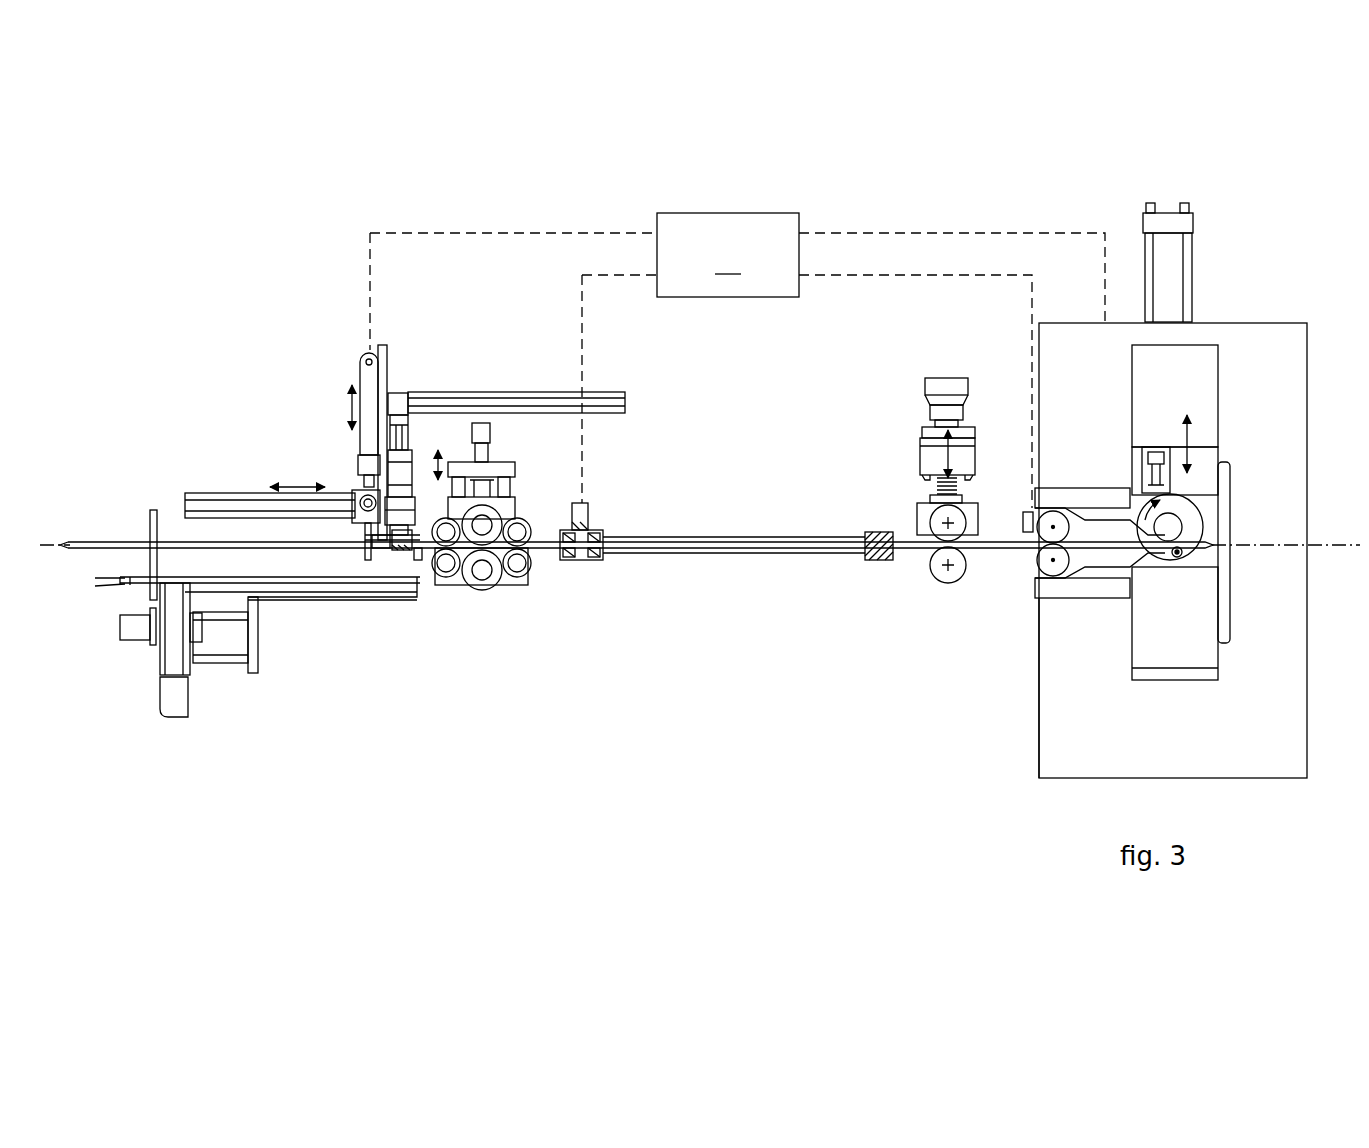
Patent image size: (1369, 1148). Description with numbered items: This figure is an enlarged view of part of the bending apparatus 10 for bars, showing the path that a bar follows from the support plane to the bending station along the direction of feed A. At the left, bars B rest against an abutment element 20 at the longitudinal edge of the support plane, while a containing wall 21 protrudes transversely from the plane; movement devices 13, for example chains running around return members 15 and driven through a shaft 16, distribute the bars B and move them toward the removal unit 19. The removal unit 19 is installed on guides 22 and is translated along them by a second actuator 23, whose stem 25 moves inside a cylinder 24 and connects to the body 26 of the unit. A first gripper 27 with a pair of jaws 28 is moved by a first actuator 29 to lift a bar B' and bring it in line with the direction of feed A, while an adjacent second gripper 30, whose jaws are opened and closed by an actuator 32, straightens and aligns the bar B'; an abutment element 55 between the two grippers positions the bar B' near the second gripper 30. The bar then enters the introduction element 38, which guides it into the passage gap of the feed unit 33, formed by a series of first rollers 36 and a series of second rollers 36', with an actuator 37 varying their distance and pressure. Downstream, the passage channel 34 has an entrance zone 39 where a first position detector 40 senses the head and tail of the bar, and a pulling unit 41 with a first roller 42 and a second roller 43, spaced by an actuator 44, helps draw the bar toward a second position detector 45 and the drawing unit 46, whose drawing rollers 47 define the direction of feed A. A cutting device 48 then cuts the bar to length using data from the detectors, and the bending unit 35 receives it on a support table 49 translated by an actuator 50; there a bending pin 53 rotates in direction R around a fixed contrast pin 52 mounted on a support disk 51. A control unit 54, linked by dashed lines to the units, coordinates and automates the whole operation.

The bending apparatus 10 is at (621, 187).
The movement devices 13 is at (192, 666).
The return members 15 is at (172, 646).
The shaft 16 is at (133, 630).
The removal unit 19 is at (288, 366).
The abutment element 20 is at (152, 527).
The containing wall 21 is at (420, 578).
The guides 22 is at (216, 506).
The second actuator 23 is at (516, 379).
The cylinder 24 is at (451, 398).
The stem 25 is at (400, 400).
The body 26 is at (384, 396).
The first gripper 27 is at (350, 530).
The jaws 28 is at (356, 548).
The first actuator 29 is at (366, 393).
The second gripper 30 is at (386, 554).
The actuator 32 is at (398, 422).
The feed unit 33 is at (496, 533).
The passage channel 34 is at (751, 547).
The bending unit 35 is at (1250, 462).
The first rollers 36 is at (481, 592).
The second rollers 36' is at (496, 501).
The actuator 37 is at (483, 432).
The introduction element 38 is at (396, 556).
The entrance zone 39 is at (586, 547).
The first position detector 40 is at (584, 517).
The pulling unit 41 is at (923, 497).
The first roller 42 is at (941, 573).
The second roller 43 is at (936, 522).
The actuator 44 is at (947, 377).
The second position detector 45 is at (1026, 522).
The drawing unit 46 is at (1100, 614).
The drawing rollers 47 is at (1058, 522).
The cutting device 48 is at (1146, 470).
The support table 49 is at (1206, 455).
The actuator 50 is at (1171, 293).
The support disk 51 is at (1178, 505).
The fixed contrast pin 52 is at (1171, 527).
The bending pin 53 is at (1180, 555).
The control unit 54 is at (737, 360).
The abutment element 55 is at (364, 557).
The direction of feed A is at (1330, 547).
The bars B is at (98, 584).
The bar B' is at (168, 513).
The direction of rotation R is at (1147, 503).